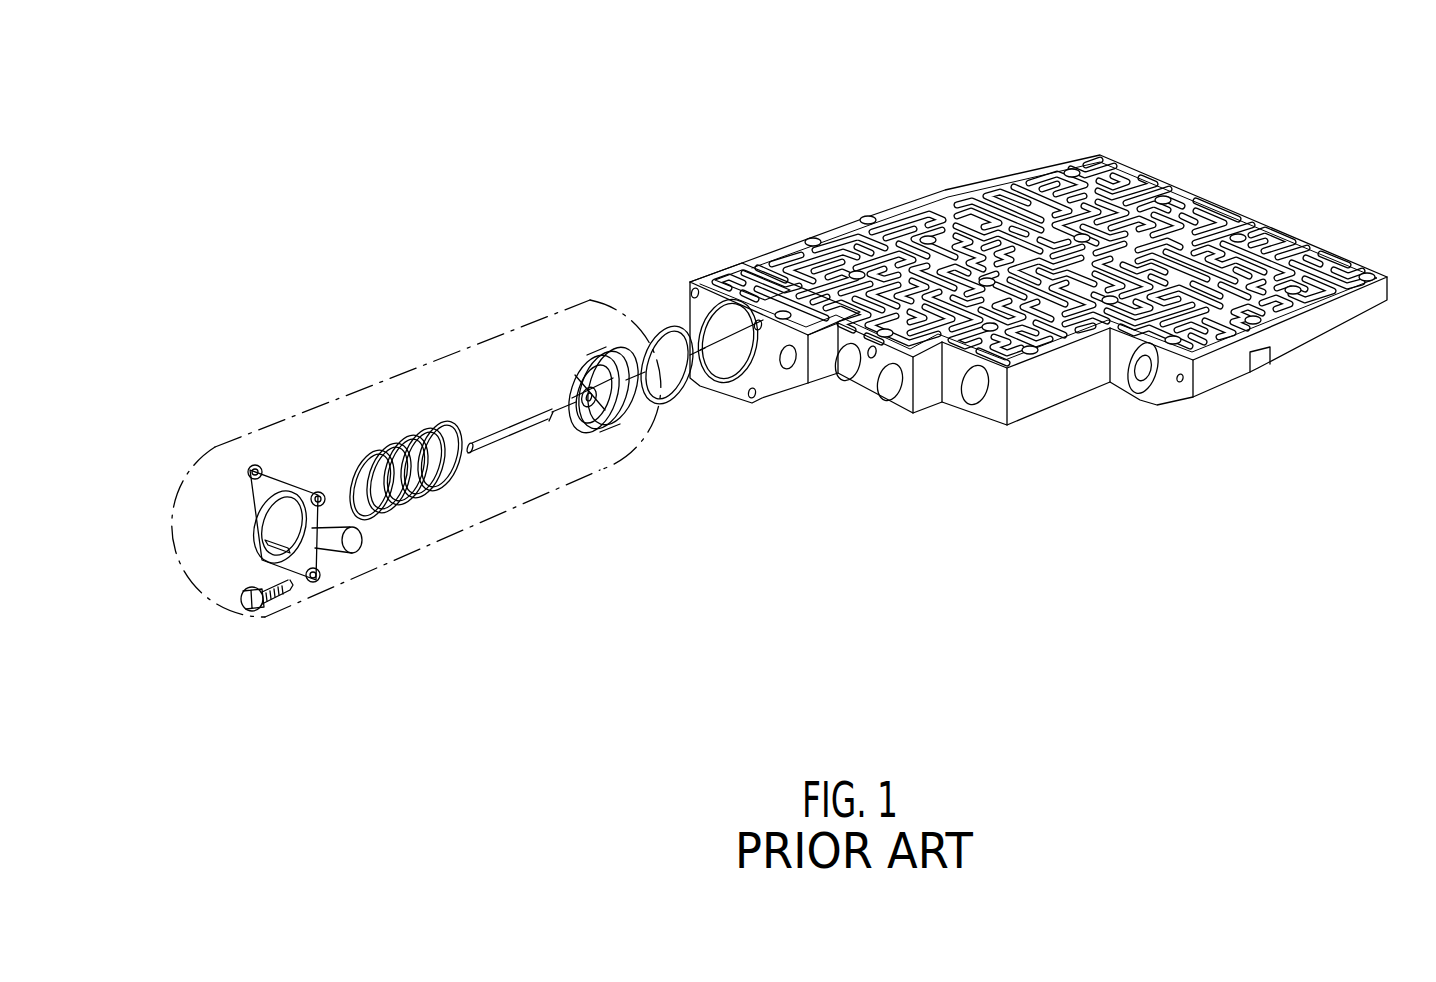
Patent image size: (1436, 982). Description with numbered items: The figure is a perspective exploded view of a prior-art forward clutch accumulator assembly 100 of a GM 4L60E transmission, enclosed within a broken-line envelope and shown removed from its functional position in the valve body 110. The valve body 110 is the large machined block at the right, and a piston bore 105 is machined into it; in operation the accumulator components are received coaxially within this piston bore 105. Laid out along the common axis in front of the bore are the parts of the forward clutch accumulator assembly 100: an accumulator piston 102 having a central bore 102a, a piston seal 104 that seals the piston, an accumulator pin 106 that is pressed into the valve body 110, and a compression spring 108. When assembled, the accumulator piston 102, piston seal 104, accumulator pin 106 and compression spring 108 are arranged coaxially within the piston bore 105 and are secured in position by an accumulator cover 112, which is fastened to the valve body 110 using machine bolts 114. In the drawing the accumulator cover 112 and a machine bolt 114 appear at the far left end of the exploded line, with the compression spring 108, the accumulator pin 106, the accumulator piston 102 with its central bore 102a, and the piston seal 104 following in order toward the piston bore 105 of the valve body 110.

The forward clutch accumulator assembly 100 is at (497, 336).
The accumulator piston 102 is at (512, 428).
The central bore 102a is at (580, 392).
The piston seal 104 is at (686, 402).
The piston bore 105 is at (717, 300).
The accumulator pin 106 is at (520, 435).
The compression spring 108 is at (417, 503).
The valve body 110 is at (1012, 234).
The accumulator cover 112 is at (257, 520).
The machine bolts 114 is at (247, 605).